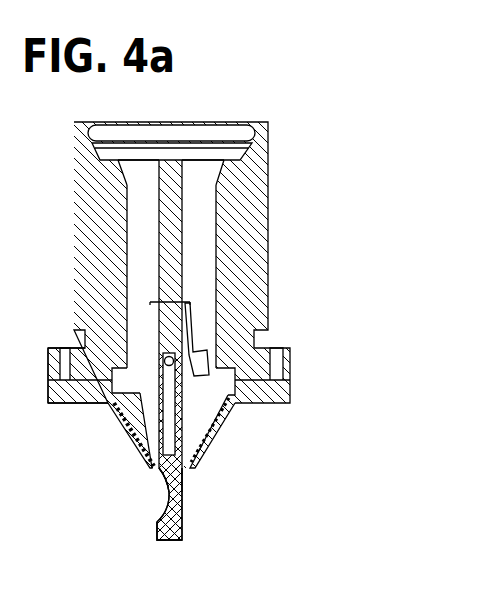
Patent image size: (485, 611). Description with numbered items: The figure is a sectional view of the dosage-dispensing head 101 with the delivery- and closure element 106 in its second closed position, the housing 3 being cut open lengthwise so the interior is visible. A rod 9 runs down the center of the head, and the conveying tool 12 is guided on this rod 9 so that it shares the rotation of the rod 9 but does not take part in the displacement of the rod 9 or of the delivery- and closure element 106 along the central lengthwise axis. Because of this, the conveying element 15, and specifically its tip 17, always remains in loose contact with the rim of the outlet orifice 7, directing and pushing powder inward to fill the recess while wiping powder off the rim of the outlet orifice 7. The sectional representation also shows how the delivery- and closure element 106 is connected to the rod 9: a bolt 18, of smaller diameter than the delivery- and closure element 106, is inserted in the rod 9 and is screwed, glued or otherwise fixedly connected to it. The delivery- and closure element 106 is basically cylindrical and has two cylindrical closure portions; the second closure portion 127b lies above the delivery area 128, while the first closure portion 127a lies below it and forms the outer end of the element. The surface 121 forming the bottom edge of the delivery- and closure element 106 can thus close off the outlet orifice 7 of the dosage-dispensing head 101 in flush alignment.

The dosage-dispensing head 101 is at (285, 198).
The rod 9 is at (167, 307).
The conveying tool 12 is at (202, 340).
The bolt 18 is at (177, 413).
The housing 3 is at (72, 422).
The conveying element 15 is at (150, 432).
The tip 17 is at (146, 471).
The outlet orifice 7 is at (160, 477).
The delivery- and closure element 106 is at (188, 517).
The second closure portion 127b is at (183, 480).
The delivery area 128 is at (173, 490).
The first closure portion 127a is at (160, 530).
The surface 121 is at (170, 541).